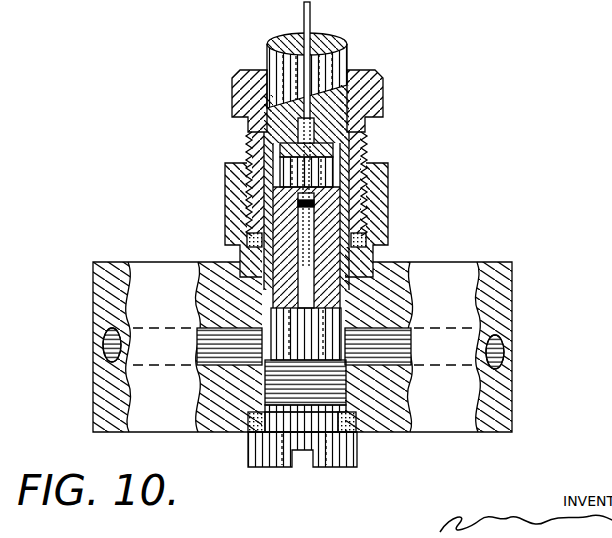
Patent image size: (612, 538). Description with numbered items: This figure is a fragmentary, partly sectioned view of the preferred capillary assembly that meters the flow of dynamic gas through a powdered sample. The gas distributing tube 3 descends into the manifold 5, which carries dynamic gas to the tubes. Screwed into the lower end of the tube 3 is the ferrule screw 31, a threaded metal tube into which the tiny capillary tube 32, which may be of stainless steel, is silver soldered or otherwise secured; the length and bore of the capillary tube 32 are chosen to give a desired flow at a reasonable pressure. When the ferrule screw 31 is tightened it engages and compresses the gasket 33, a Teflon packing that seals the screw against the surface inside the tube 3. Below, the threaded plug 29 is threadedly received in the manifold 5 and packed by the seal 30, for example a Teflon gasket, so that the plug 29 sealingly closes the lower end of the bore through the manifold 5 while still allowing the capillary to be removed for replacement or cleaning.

The gas distributing tube 3 is at (365, 110).
The manifold 5 is at (458, 293).
The threaded plug 29 is at (327, 458).
The seal 30 is at (357, 421).
The ferrule screw 31 is at (380, 258).
The capillary tube 32 is at (310, 24).
The gasket 33 is at (325, 148).